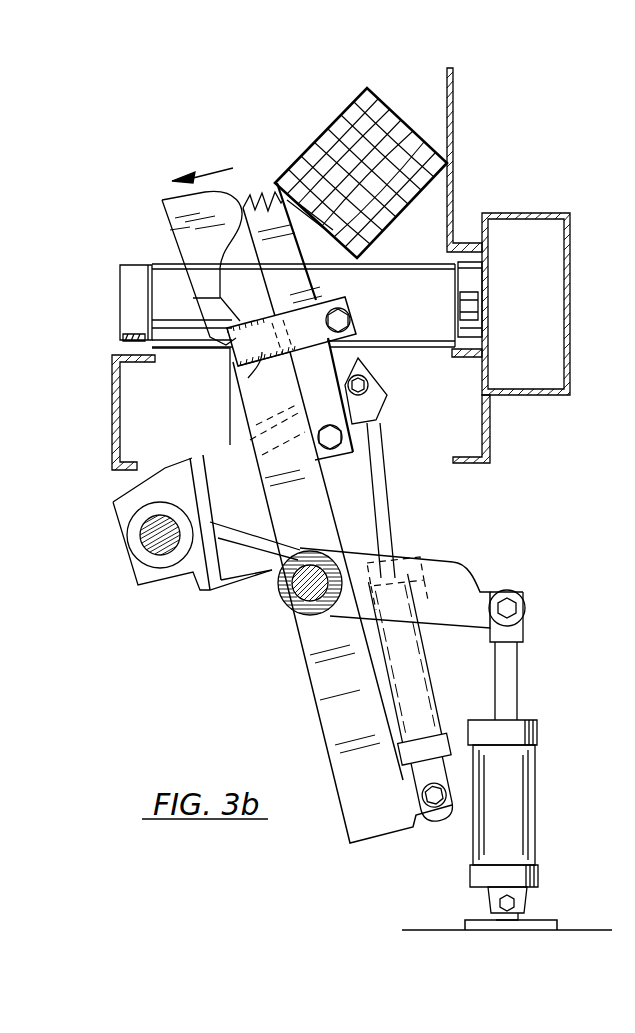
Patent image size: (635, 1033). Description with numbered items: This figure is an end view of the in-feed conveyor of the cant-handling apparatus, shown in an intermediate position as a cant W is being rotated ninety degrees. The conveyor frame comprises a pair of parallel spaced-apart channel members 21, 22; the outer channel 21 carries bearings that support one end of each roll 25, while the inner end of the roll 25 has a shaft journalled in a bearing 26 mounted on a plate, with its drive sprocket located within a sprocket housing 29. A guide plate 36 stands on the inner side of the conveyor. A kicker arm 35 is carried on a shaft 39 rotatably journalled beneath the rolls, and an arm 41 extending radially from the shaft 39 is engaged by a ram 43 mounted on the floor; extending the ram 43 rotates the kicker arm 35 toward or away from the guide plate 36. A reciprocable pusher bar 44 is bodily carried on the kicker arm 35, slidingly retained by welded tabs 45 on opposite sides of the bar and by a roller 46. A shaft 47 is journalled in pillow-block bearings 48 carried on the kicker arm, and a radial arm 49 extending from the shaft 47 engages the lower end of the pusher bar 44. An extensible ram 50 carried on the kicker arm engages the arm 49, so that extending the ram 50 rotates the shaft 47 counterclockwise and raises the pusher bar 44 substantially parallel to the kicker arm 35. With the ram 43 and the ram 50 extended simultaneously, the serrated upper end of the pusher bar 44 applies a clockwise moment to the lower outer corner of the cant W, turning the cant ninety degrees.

The cant W is at (397, 113).
The guide plate 36 is at (458, 122).
The sprocket housing 29 is at (570, 310).
The channel member 22 is at (490, 440).
The bearing 26 is at (472, 282).
The roll 25 is at (387, 270).
The channel member 21 is at (116, 410).
The kicker arm 35 is at (177, 248).
The pusher bar 44 is at (264, 197).
The roller 46 is at (352, 300).
The welded tab 45 is at (258, 370).
The arm 49 is at (378, 380).
The pillow-block bearing 48 is at (113, 525).
The shaft 47 is at (130, 562).
The arm 41 is at (440, 557).
The shaft 39 is at (280, 600).
The ram 50 is at (436, 676).
The ram 43 is at (535, 813).